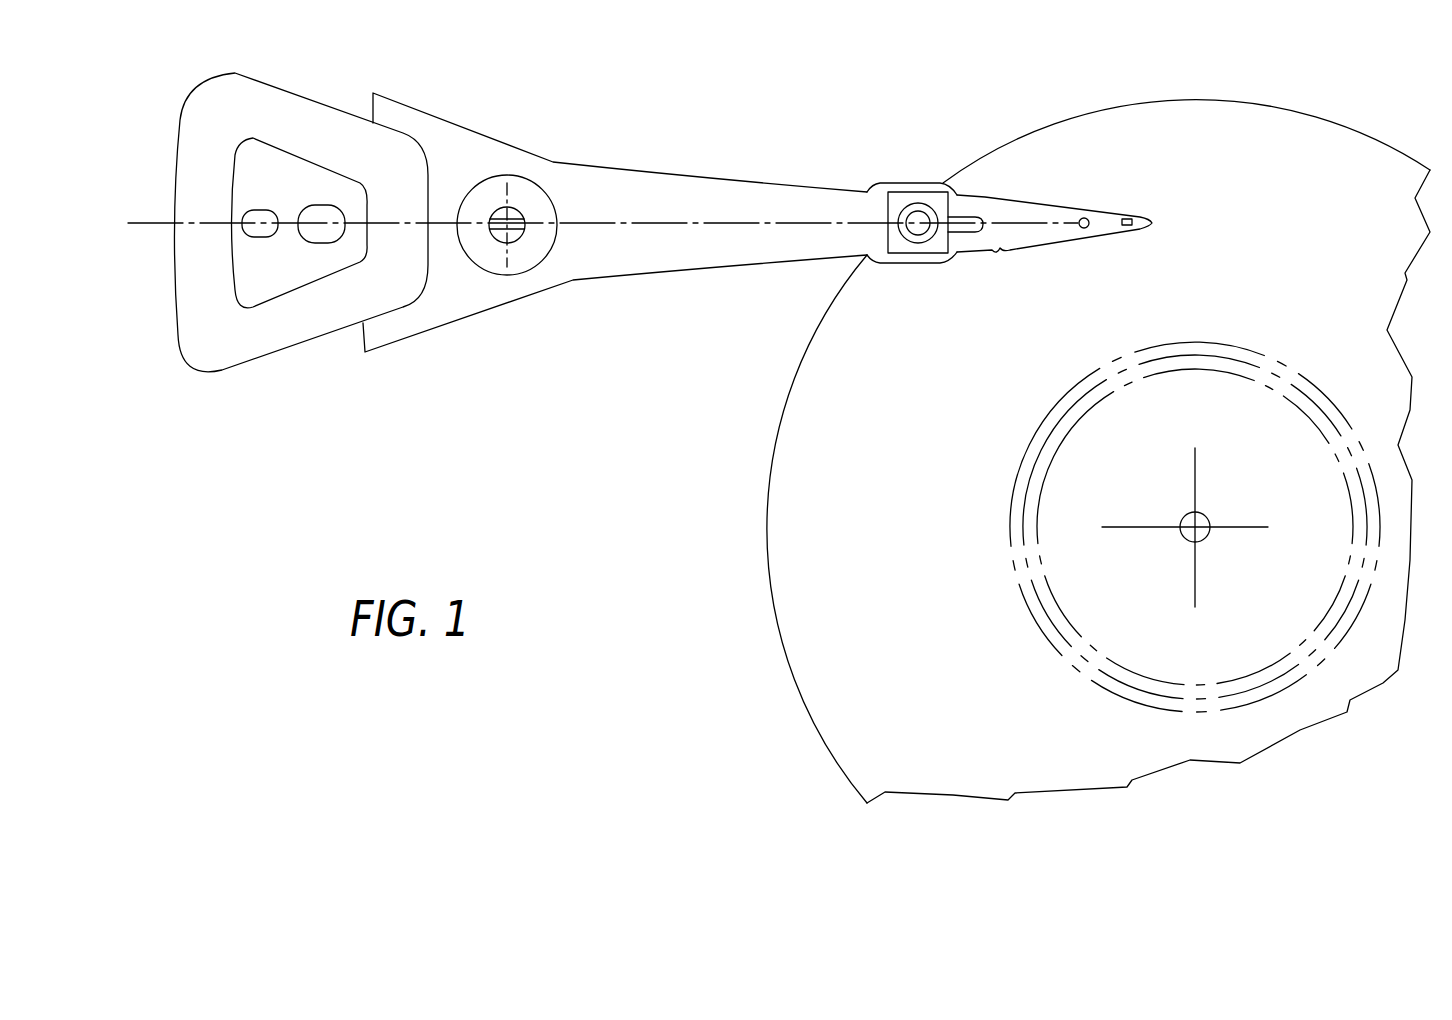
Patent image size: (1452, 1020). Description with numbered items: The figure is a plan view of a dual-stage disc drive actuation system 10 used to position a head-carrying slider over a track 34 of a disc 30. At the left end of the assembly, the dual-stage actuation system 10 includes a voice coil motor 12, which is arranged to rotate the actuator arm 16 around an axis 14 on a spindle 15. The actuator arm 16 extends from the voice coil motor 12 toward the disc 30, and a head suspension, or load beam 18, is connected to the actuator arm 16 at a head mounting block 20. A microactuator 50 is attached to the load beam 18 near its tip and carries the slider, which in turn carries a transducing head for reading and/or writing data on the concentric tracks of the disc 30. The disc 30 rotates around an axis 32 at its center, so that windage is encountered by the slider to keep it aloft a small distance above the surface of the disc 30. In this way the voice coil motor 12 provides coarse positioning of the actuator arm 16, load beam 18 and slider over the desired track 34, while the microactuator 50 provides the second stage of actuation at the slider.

The dual-stage disc drive actuation system 10 is at (582, 390).
The voice coil motor 12 is at (202, 367).
The axis 14 is at (517, 213).
The spindle 15 is at (493, 240).
The actuator arm 16 is at (758, 265).
The head suspension/load beam 18 is at (1078, 243).
The head mounting block 20 is at (920, 255).
The disc 30 is at (790, 414).
The axis 32 is at (1183, 540).
The track 34 is at (1243, 360).
The microactuator 50 is at (1127, 227).